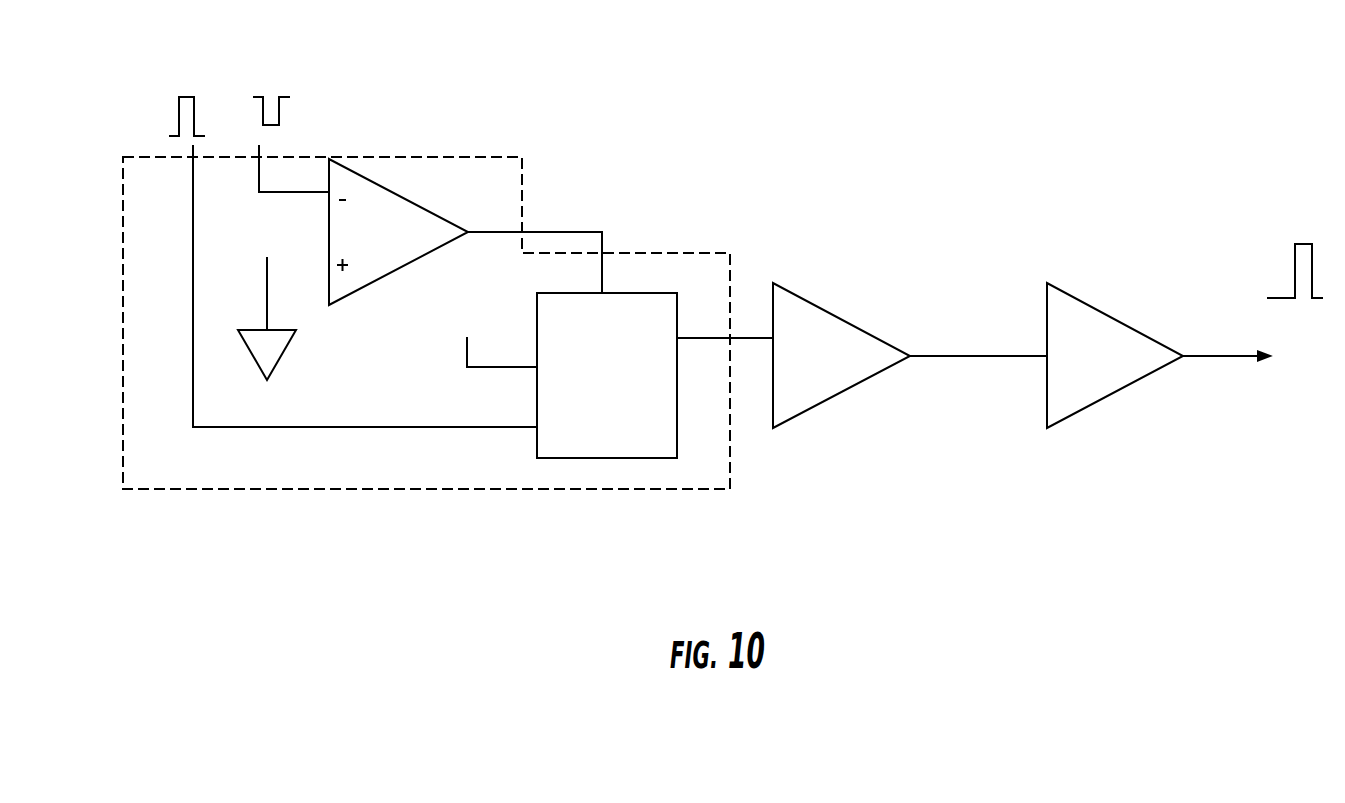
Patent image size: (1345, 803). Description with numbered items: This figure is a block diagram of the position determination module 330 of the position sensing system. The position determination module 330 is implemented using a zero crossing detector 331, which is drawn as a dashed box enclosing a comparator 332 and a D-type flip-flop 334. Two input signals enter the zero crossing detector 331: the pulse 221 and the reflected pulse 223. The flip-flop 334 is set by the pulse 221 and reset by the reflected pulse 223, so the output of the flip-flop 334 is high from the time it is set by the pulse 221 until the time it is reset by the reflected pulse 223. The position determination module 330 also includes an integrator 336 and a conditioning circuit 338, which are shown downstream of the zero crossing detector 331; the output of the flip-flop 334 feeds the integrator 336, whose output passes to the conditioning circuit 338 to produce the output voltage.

The pulse 221 is at (163, 89).
The reflected pulse 223 is at (280, 79).
The position determination module 330 is at (649, 78).
The zero crossing detector 331 is at (157, 460).
The comparator 332 is at (387, 222).
The D-type flip-flop 334 is at (628, 458).
The integrator 336 is at (853, 372).
The conditioning circuit 338 is at (1108, 337).